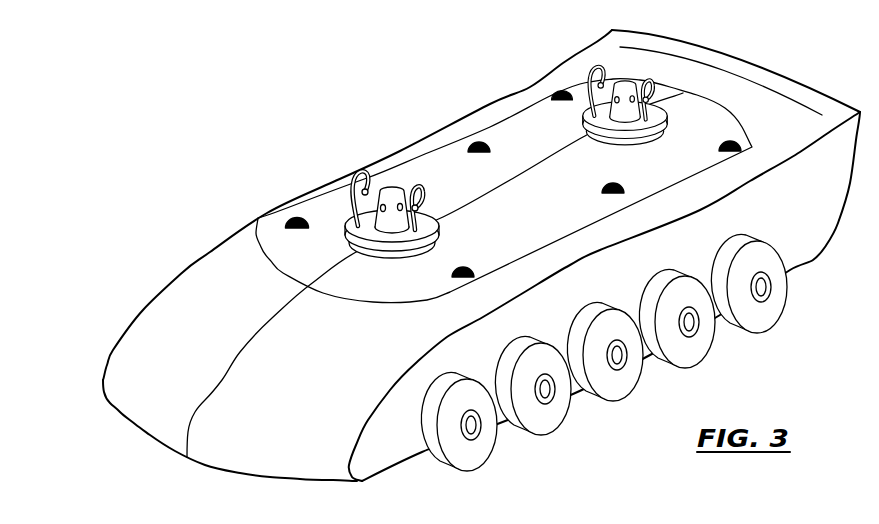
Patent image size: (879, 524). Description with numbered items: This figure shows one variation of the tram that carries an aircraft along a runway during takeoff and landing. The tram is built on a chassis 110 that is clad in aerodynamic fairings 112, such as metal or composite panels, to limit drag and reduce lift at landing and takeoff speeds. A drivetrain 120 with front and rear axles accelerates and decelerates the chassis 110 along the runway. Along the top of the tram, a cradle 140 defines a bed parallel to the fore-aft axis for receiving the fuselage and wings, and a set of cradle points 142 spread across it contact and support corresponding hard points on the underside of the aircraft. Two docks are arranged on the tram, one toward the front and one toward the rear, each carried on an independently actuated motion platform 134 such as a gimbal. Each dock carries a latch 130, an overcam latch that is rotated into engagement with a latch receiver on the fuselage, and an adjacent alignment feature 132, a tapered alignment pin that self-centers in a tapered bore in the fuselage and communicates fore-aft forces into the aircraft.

The chassis 110 is at (480, 255).
The aerodynamic fairings 112 is at (481, 255).
The drivetrain 120 is at (680, 352).
The latch 130 is at (474, 162).
The alignment feature 132 is at (390, 188).
The motion platform 134 is at (356, 224).
The cradle 140 is at (497, 167).
The cradle points 142 is at (294, 218).